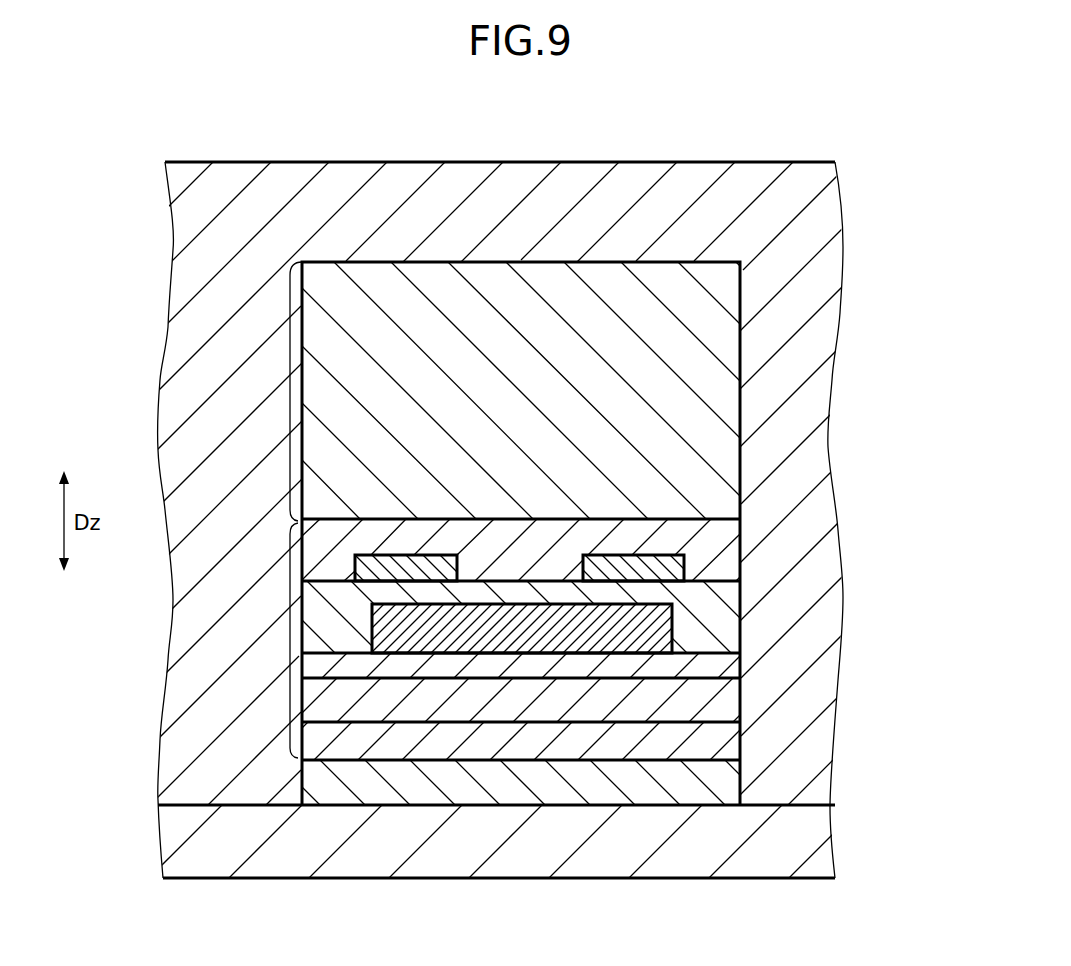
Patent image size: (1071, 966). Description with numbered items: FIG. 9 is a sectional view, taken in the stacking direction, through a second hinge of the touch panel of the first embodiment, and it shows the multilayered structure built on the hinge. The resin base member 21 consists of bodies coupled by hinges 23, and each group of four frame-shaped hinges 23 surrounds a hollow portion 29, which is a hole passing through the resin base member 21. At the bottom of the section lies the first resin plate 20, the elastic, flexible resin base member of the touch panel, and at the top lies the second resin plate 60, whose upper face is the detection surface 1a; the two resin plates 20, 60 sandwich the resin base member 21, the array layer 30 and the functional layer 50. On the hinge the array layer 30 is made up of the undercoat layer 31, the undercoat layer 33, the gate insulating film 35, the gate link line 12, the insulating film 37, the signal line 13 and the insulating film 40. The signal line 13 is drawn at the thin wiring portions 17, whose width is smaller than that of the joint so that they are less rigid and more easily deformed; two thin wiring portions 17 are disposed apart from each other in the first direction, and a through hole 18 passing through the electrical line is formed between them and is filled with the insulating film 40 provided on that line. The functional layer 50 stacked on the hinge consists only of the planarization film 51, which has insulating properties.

The detection surface 1a is at (560, 162).
The second resin plate 60 is at (763, 190).
The planarization film 51 is at (730, 383).
The functional layer 50 is at (290, 390).
The through hole 18 is at (541, 543).
The insulating film 40 is at (732, 557).
The insulating film 37 is at (732, 620).
The array layer 30 is at (290, 641).
The gate insulating film 35 is at (732, 662).
The undercoat layer 33 is at (732, 700).
The undercoat layer 31 is at (732, 740).
The resin base member 21 is at (565, 783).
The hinge 23 is at (730, 792).
The first resin plate 20 is at (818, 840).
The gate link line 12 is at (523, 650).
The thin wiring portion 17 is at (522, 750).
The signal line 13 is at (372, 580).
The hollow portion 29 is at (258, 796).